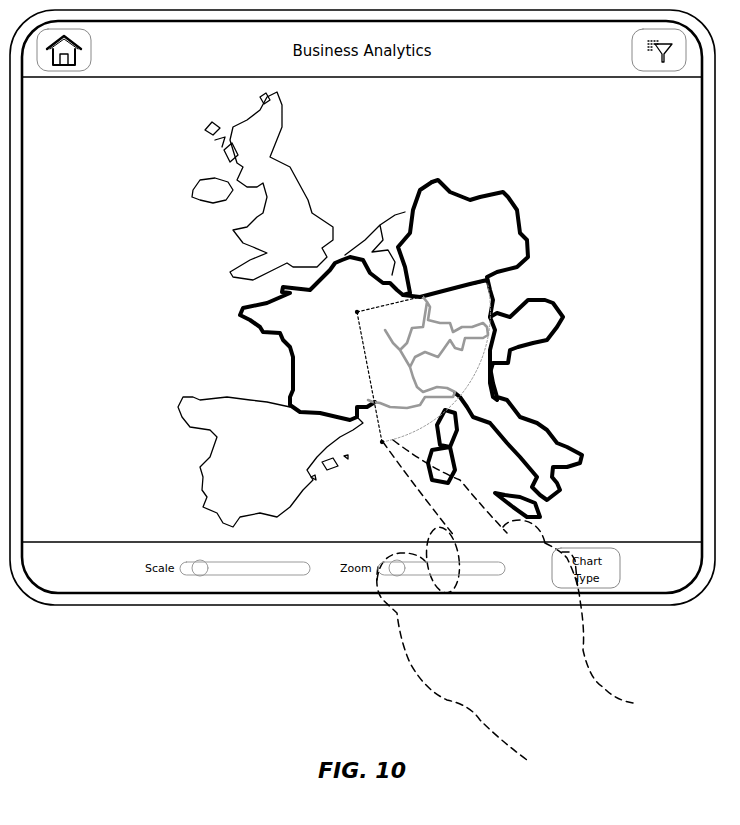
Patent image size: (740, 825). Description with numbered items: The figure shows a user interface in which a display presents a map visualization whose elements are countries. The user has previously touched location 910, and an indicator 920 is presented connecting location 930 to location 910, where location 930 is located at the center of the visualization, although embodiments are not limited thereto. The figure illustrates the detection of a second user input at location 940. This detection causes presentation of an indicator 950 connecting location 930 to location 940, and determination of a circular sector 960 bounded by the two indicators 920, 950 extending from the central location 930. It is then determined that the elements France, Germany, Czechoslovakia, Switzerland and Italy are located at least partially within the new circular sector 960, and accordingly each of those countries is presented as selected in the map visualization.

The location 910 is at (487, 281).
The indicator 920 is at (443, 290).
The location 930 is at (357, 312).
The location 940 is at (382, 442).
The indicator 950 is at (368, 378).
The circular sector 960 is at (447, 346).